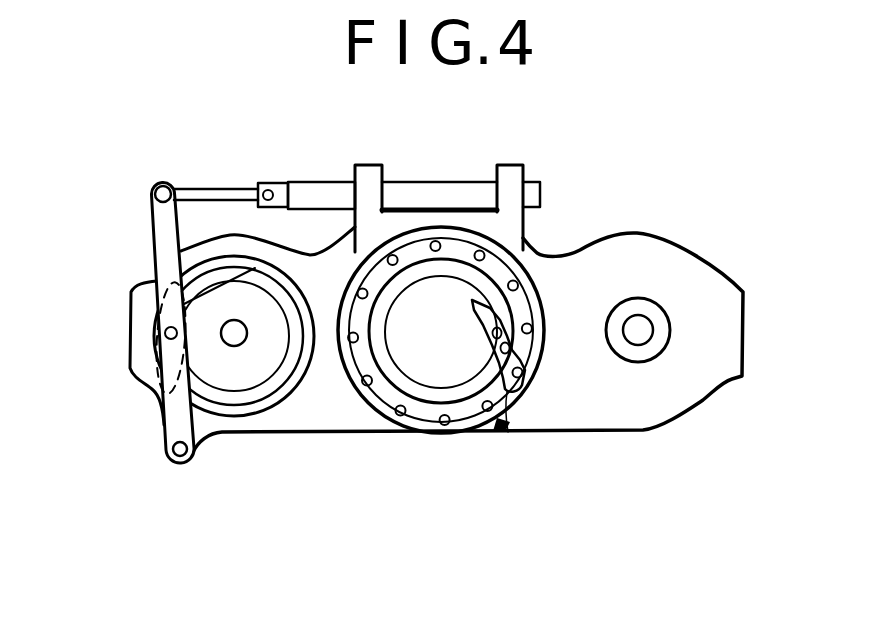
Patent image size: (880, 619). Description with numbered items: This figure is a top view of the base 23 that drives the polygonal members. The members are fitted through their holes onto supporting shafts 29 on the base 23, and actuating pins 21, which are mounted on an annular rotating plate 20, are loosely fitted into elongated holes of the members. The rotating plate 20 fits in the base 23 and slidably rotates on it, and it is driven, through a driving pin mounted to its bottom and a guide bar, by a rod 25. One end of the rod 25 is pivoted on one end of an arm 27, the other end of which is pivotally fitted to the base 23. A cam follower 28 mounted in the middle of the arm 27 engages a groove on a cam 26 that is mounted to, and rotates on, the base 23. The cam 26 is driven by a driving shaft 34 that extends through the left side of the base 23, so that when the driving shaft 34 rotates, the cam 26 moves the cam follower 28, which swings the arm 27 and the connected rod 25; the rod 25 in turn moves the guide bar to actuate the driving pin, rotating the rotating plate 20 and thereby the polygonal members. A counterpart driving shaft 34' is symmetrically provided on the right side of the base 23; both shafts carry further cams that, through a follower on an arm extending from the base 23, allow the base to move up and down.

The annular rotating plate 20 is at (457, 397).
The actuating pins 21 is at (495, 343).
The base 23 is at (130, 345).
The rod 25 is at (452, 181).
The cam 26 is at (263, 415).
The arm 27 is at (155, 231).
The cam follower 28 is at (165, 365).
The supporting shafts 29 is at (443, 421).
The driving shaft 34 is at (285, 422).
The driving shaft 34' is at (709, 305).